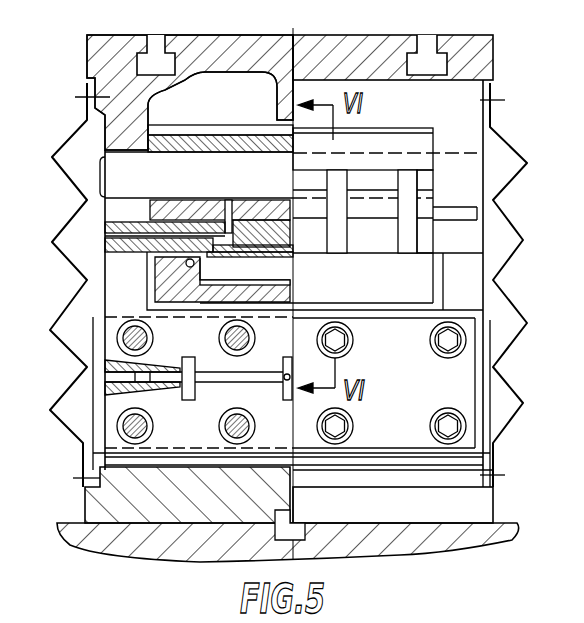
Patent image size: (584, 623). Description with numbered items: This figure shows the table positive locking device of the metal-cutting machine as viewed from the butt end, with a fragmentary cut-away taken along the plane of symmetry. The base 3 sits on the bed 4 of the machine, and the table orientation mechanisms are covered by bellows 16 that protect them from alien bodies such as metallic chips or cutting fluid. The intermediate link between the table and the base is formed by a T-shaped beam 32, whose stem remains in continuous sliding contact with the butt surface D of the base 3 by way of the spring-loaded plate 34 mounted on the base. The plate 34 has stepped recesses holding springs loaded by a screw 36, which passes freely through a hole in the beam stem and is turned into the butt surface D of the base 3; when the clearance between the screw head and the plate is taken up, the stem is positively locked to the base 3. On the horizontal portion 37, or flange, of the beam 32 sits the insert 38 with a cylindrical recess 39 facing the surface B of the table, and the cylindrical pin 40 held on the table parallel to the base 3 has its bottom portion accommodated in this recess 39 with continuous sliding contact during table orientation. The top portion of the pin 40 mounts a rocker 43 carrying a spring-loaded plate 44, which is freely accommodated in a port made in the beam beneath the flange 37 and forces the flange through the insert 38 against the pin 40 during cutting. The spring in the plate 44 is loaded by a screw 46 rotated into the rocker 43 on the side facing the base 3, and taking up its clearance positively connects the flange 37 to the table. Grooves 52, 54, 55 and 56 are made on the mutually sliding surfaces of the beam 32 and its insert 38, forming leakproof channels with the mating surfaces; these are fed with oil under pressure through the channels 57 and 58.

The base 3 is at (473, 505).
The bed 4 is at (78, 538).
The bellows 16 is at (515, 427).
The T-shaped beam 32 is at (120, 287).
The spring-loaded plate 34 is at (460, 383).
The screw 36 is at (127, 428).
The horizontal portion (flange) 37 is at (390, 214).
The insert 38 is at (150, 212).
The cylindrical recess 39 is at (180, 195).
The cylindrical pin 40 is at (113, 172).
The rocker 43 is at (418, 147).
The spring-loaded plate 44 is at (415, 291).
The screw 46 is at (408, 230).
The groove 52 is at (188, 384).
The groove 54 is at (258, 252).
The groove 55 is at (270, 222).
The groove 56 is at (232, 196).
The channel 57 is at (100, 378).
The channel 58 is at (110, 242).
The surface of the table B is at (211, 78).
The butt surface of the base D is at (97, 340).